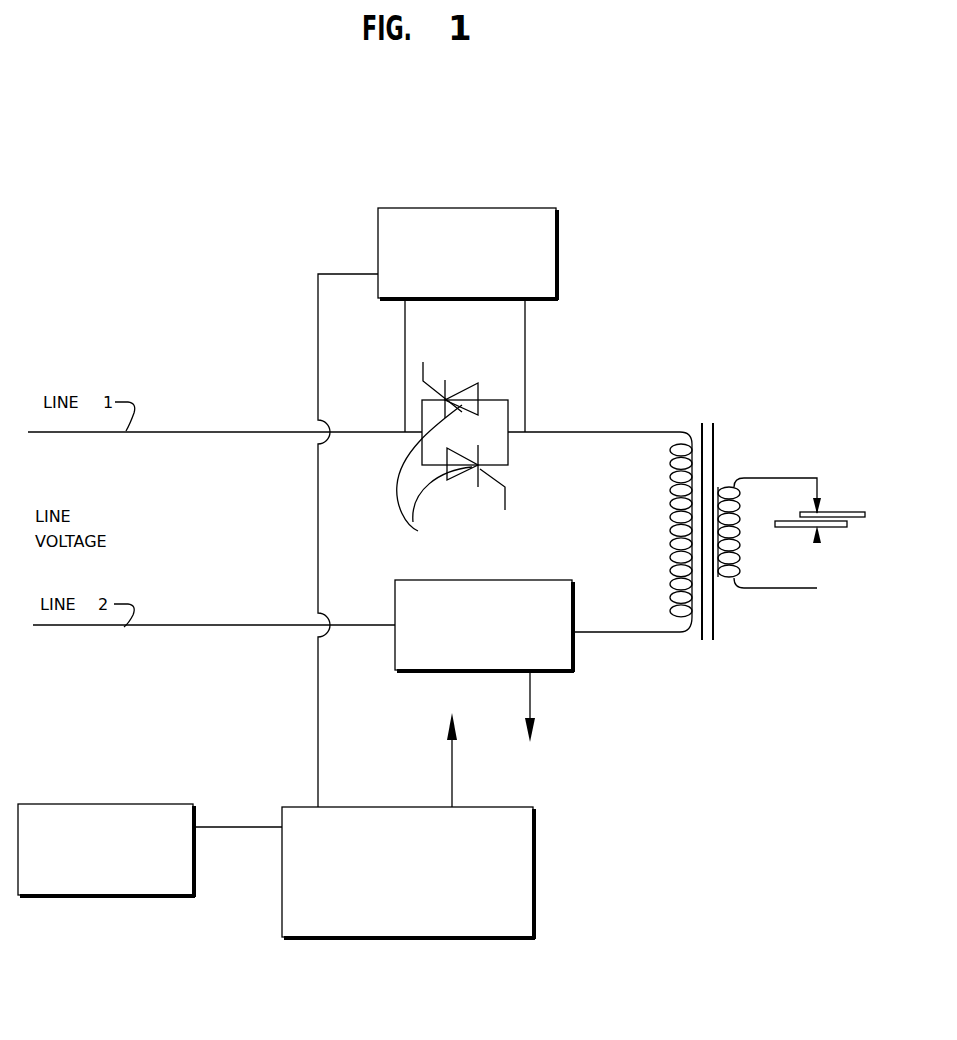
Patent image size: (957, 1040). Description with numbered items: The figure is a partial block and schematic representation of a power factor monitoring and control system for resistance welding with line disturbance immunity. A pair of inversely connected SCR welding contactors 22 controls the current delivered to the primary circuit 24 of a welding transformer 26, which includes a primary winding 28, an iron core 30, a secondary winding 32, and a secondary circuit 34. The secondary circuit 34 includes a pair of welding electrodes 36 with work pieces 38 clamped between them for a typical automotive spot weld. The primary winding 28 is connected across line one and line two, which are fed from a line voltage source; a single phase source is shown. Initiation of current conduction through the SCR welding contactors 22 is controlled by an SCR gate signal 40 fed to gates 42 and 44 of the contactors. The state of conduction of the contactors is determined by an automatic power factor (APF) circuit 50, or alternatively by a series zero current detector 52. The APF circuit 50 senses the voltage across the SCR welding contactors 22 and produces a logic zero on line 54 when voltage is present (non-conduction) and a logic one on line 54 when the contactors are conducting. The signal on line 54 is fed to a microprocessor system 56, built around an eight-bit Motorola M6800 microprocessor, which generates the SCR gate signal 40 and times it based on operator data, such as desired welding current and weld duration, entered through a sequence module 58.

The SCR welding contactors 22 is at (452, 474).
The primary circuit 24 is at (598, 518).
The welding transformer 26 is at (707, 413).
The primary winding 28 is at (693, 424).
The iron core 30 is at (716, 485).
The secondary winding 32 is at (734, 490).
The secondary circuit 34 is at (781, 560).
The welding electrodes 36 is at (838, 513).
The work pieces 38 is at (848, 527).
The SCR gate signal 40 is at (452, 765).
The gate 42 is at (505, 510).
The gate 44 is at (423, 362).
The automatic power factor (APF) circuit 50 is at (518, 208).
The zero current detector 52 is at (572, 660).
The line 54 is at (318, 535).
The microprocessor system 56 is at (282, 875).
The sequence module 58 is at (55, 895).